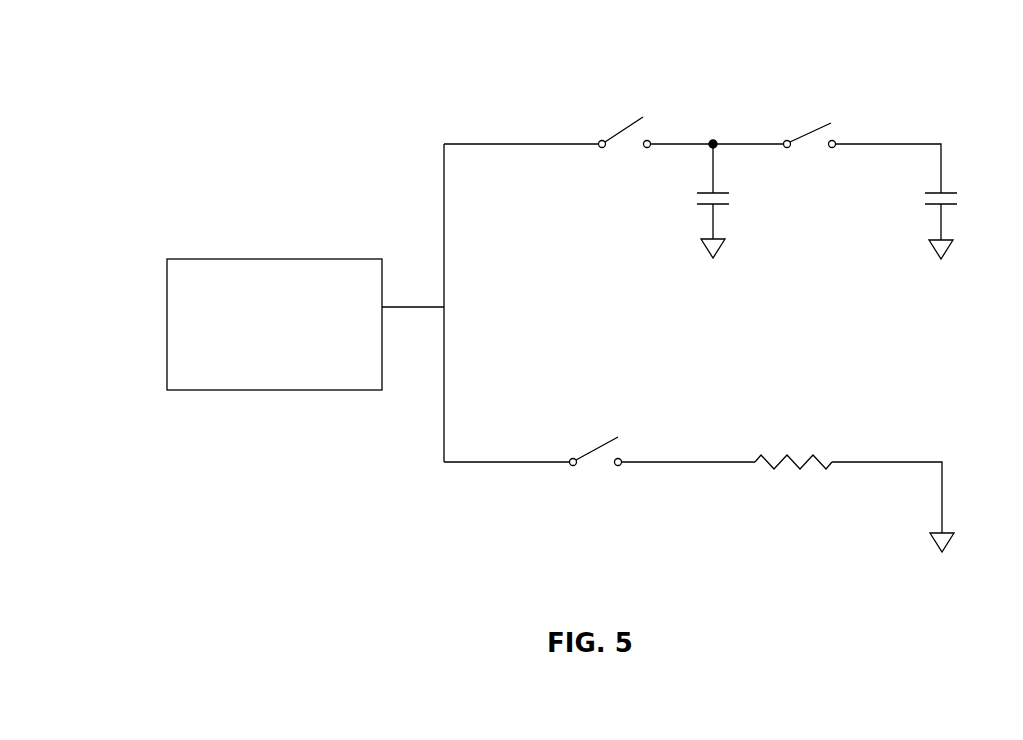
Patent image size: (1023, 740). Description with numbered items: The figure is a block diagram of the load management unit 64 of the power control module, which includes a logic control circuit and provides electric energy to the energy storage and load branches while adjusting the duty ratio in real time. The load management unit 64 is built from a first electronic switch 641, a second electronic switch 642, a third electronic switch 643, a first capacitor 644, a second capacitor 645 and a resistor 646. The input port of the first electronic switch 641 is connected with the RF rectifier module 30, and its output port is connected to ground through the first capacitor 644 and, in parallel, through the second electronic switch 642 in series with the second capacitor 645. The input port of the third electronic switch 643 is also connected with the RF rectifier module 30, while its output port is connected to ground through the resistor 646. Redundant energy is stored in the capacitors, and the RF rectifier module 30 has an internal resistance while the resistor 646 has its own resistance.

The RF rectifier module 30 is at (202, 257).
The load management unit 64 is at (741, 97).
The first electronic switch 641 is at (622, 154).
The second electronic switch 642 is at (818, 153).
The third electronic switch 643 is at (597, 474).
The first capacitor 644 is at (738, 199).
The second capacitor 645 is at (965, 221).
The resistor 646 is at (793, 486).